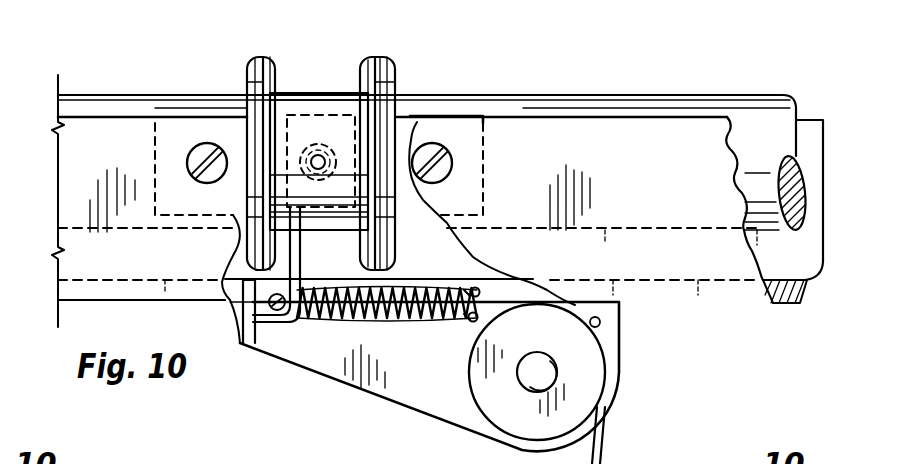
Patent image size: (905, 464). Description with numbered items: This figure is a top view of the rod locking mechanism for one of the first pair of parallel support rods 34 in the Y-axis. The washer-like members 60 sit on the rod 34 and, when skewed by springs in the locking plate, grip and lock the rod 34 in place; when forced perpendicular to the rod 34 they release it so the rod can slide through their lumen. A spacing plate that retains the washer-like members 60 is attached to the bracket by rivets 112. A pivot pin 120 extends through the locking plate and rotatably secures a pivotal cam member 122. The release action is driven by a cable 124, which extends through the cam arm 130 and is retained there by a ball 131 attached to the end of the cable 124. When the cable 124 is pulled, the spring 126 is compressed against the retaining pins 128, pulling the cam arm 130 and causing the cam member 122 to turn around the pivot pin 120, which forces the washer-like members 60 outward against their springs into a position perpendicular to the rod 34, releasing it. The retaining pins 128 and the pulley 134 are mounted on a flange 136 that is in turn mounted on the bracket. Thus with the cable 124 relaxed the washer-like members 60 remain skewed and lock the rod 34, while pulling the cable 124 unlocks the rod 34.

The support rod 34 is at (745, 127).
The washer-like member 60 is at (264, 57).
The rivet 112 is at (426, 148).
The pivot pin 120 is at (319, 143).
The cam member 122 is at (339, 113).
The cable 124 is at (604, 441).
The spring 126 is at (363, 313).
The retaining pin 128 is at (476, 320).
The cam arm 130 is at (298, 276).
The ball 131 is at (255, 312).
The pulley 134 is at (583, 368).
The flange 136 is at (437, 410).